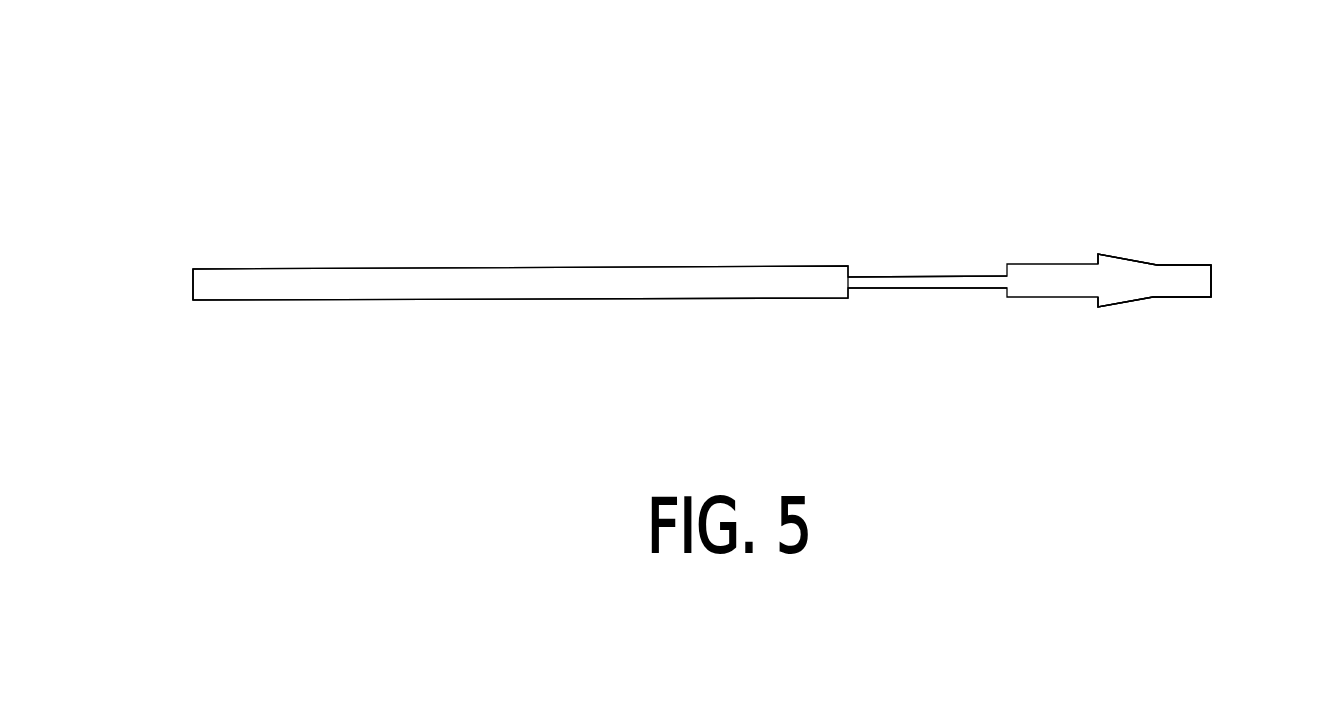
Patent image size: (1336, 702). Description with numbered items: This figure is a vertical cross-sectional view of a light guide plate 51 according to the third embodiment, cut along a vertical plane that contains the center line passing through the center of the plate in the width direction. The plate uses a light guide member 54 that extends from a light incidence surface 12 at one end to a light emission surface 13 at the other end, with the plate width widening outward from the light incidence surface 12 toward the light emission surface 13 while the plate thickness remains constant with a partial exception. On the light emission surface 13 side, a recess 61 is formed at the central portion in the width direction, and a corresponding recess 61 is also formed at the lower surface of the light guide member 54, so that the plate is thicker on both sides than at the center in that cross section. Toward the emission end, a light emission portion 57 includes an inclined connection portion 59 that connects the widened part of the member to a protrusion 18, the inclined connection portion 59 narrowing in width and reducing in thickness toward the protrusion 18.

The light guide plate 51 is at (246, 133).
The light guide member 54 is at (551, 282).
The light incidence surface 12 is at (186, 280).
The recess 61 is at (927, 268).
The light emission portion 57 is at (1190, 172).
The inclined connection portion 59 is at (1131, 272).
The protrusion 18 is at (1179, 272).
The light emission surface 13 is at (1220, 286).